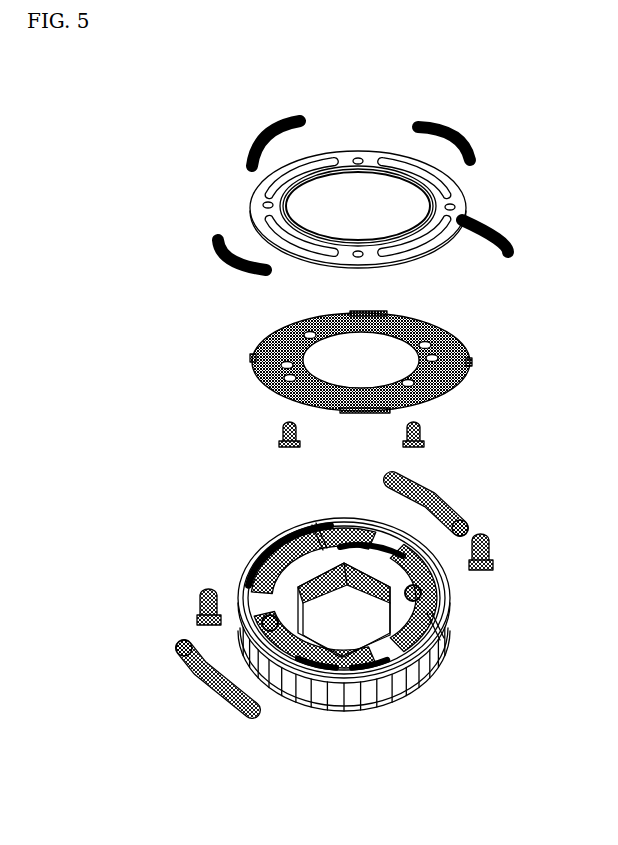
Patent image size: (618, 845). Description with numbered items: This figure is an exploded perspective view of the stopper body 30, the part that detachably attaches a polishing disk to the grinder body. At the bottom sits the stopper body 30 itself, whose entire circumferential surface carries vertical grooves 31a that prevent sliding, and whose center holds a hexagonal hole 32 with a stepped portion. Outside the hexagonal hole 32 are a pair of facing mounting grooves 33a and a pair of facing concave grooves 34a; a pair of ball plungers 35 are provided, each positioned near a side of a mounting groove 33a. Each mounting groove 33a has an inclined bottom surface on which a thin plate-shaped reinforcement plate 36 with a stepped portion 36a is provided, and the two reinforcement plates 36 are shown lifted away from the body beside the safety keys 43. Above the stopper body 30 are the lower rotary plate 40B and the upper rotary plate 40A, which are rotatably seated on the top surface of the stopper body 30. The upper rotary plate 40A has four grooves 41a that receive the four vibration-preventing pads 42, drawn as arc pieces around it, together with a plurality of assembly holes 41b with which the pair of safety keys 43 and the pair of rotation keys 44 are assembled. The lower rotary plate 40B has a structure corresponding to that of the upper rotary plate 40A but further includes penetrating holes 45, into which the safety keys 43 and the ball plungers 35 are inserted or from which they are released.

The stopper body 30 is at (243, 568).
The vertical grooves 31a is at (350, 690).
The hexagonal hole 32 is at (364, 631).
The mounting grooves 33a is at (367, 522).
The concave grooves 34a is at (298, 530).
The ball plungers 35 is at (261, 547).
The reinforcement plate 36 is at (432, 487).
The stepped portion 36a is at (465, 514).
The upper rotary plate 40A is at (324, 140).
The lower rotary plate 40B is at (250, 336).
The grooves 41a is at (435, 178).
The assembly holes 41b is at (362, 158).
The vibration-preventing pads 42 is at (258, 138).
The safety keys 43 is at (199, 596).
The rotation keys 44 is at (278, 437).
The penetrating holes 45 is at (432, 325).